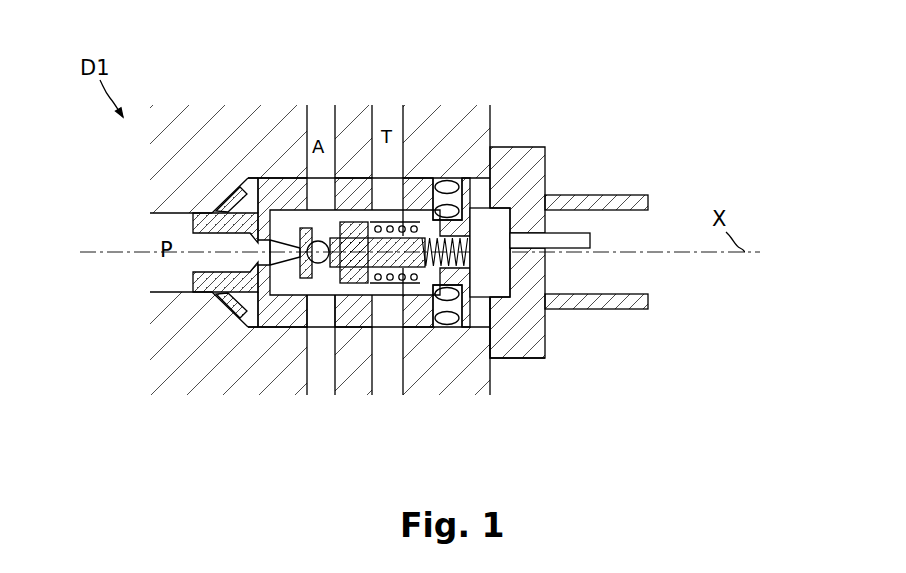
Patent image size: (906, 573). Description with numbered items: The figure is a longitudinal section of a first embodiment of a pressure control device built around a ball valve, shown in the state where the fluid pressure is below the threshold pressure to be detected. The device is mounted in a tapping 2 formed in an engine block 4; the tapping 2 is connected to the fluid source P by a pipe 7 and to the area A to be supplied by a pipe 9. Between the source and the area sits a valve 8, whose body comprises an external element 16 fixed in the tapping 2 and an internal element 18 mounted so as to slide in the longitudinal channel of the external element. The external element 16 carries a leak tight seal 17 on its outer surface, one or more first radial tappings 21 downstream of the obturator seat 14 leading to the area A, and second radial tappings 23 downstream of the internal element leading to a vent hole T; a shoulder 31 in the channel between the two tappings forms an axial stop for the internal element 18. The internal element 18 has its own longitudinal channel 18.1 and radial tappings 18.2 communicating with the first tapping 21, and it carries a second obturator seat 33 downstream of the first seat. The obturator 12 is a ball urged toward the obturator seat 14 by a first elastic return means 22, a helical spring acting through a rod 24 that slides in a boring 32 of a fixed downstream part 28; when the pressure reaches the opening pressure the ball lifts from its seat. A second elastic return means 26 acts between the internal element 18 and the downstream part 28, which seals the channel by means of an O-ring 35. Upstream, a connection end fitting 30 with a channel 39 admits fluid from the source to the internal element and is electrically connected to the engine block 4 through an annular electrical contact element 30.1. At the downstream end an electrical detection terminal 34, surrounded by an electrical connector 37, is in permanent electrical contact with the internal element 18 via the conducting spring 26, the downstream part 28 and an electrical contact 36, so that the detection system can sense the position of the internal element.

The tapping 2 is at (372, 330).
The engine block 4 is at (178, 200).
The pipe 7 is at (168, 293).
The valve 8 is at (263, 340).
The pipe 9 is at (310, 176).
The obturator 12 is at (245, 200).
The obturator seat 14 is at (305, 330).
The external element 16 is at (280, 322).
The leak tight seal 17 is at (453, 177).
The internal element 18 is at (285, 200).
The longitudinal channel 18.1 is at (355, 285).
The radial tappings 18.2 is at (335, 190).
The first radial tappings 21 is at (293, 195).
The first elastic return means 22 is at (517, 300).
The second radial tappings 23 is at (380, 200).
The rod 24 is at (425, 180).
The second elastic return means 26 is at (410, 300).
The downstream part 28 is at (440, 290).
The connection end fitting 30 is at (212, 292).
The annular electrical contact element 30.1 is at (228, 190).
The shoulder 31 is at (363, 200).
The boring 32 is at (405, 195).
The second obturator seat 33 is at (320, 265).
The electrical detection terminal 34 is at (577, 243).
The O-ring 35 is at (478, 302).
The electrical contact 36 is at (485, 227).
The electrical connector 37 is at (565, 178).
The channel 39 is at (193, 235).